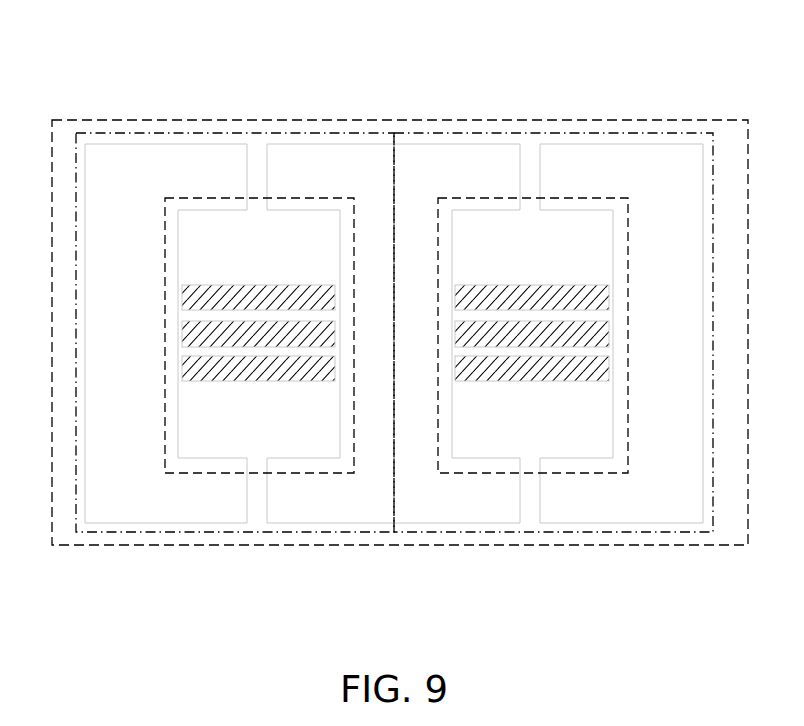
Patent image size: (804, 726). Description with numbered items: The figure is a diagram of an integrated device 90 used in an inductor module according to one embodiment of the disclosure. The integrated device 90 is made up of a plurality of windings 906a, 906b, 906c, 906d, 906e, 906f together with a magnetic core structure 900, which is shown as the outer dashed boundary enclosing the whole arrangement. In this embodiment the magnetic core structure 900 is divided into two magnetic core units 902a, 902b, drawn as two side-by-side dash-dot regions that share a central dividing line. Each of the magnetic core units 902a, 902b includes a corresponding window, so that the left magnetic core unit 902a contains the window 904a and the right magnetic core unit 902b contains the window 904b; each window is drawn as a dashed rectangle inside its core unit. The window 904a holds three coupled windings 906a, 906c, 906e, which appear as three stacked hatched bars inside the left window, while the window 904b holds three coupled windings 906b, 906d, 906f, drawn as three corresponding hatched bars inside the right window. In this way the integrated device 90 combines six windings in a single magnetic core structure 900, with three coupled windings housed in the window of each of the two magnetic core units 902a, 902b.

The integrated device 90 is at (597, 52).
The magnetic core structure 900 is at (713, 120).
The magnetic core unit 902a is at (197, 132).
The magnetic core unit 902b is at (498, 133).
The window 904a is at (312, 198).
The window 904b is at (585, 198).
The winding 906a is at (260, 285).
The winding 906b is at (540, 285).
The winding 906c is at (182, 333).
The winding 906d is at (608, 330).
The winding 906e is at (264, 381).
The winding 906f is at (538, 381).